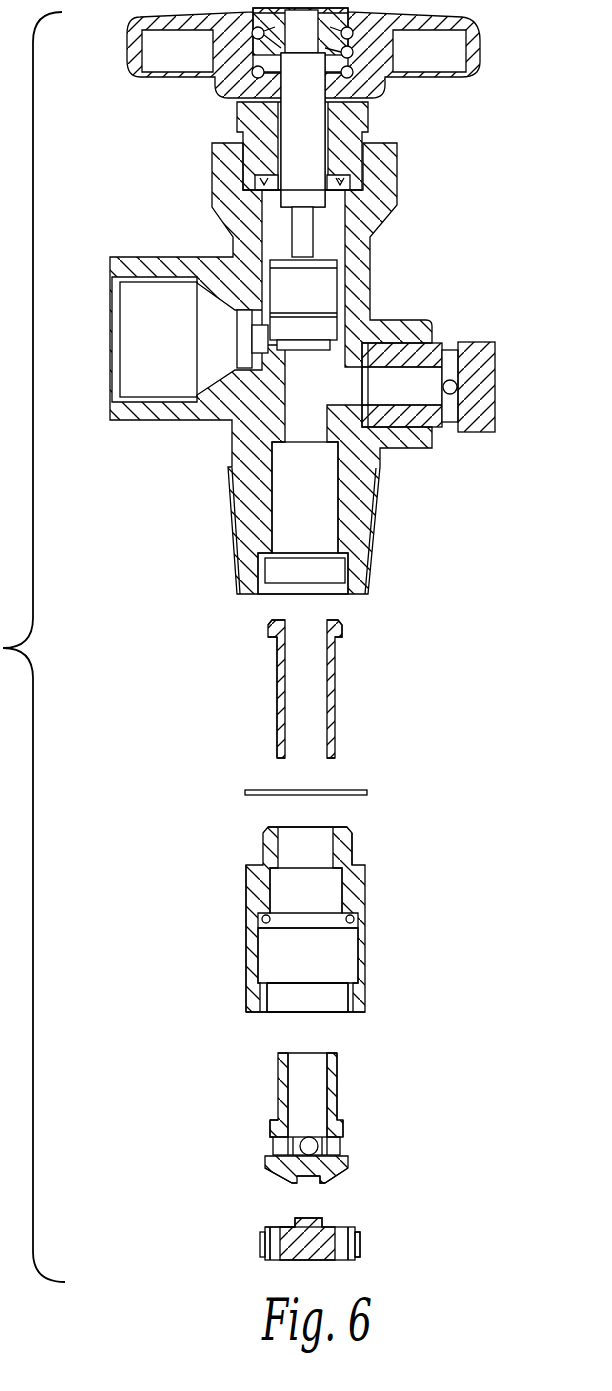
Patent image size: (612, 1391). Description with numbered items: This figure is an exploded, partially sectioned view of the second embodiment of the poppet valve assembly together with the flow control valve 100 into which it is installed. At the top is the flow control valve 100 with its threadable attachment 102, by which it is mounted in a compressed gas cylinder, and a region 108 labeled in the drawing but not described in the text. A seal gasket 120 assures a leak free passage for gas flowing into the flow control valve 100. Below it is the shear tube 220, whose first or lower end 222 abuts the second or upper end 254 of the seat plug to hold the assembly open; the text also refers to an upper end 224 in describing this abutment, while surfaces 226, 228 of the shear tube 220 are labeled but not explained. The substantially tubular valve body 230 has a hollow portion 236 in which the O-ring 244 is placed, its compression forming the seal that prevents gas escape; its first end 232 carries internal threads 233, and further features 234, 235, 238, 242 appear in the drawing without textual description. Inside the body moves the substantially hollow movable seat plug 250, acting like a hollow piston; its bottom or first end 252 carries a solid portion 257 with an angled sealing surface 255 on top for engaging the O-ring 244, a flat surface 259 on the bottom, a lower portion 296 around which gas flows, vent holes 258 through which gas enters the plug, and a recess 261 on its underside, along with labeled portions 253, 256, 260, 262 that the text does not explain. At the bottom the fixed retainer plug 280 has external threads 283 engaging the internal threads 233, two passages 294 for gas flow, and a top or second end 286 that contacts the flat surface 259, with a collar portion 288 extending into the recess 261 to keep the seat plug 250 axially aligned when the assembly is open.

The flow control valve 100 is at (398, 186).
The threadable attachment 102 is at (373, 531).
The outlet bore 108 is at (322, 512).
The seal gasket 120 is at (345, 790).
The shear tube 220 is at (337, 650).
The first or lower end of shear tube 222 is at (280, 758).
The second or upper end 224 is at (267, 623).
The outer surface of sleeve 226 is at (277, 703).
The upper end of sleeve 228 is at (337, 651).
The substantially tubular valve body 230 is at (366, 960).
The first end of valve body 232 is at (361, 1010).
The internal threads 233 is at (347, 995).
The upper end of housing 234 is at (275, 827).
The neck of housing 235 is at (352, 850).
The hollow portion 236 is at (246, 893).
The lower outer wall 238 is at (246, 966).
The upper chamber 242 is at (331, 868).
The O-ring 244 is at (346, 924).
The substantially hollow movable seat plug 250 is at (337, 1066).
The bottom or first end of seat plug 252 is at (270, 1128).
The conical surface 253 is at (268, 1166).
The second or upper end of seat plug 254 is at (280, 1055).
The angled sealing surface 255 is at (278, 1112).
The outer surface of poppet 256 is at (337, 1081).
The solid portion 257 is at (345, 1172).
The vent holes 258 is at (309, 1136).
The flat surface 259 is at (324, 1182).
The outer wall of flange 260 is at (338, 1113).
The recess 261 is at (306, 1184).
The bore of poppet 262 is at (295, 1086).
The fixed retainer plug 280 is at (261, 1240).
The external threads 283 is at (360, 1245).
The top or second end of retainer plug 286 is at (268, 1227).
The collar portion 288 is at (330, 1226).
The passages 294 is at (275, 1261).
The lower portion of solid portion 296 is at (281, 1177).